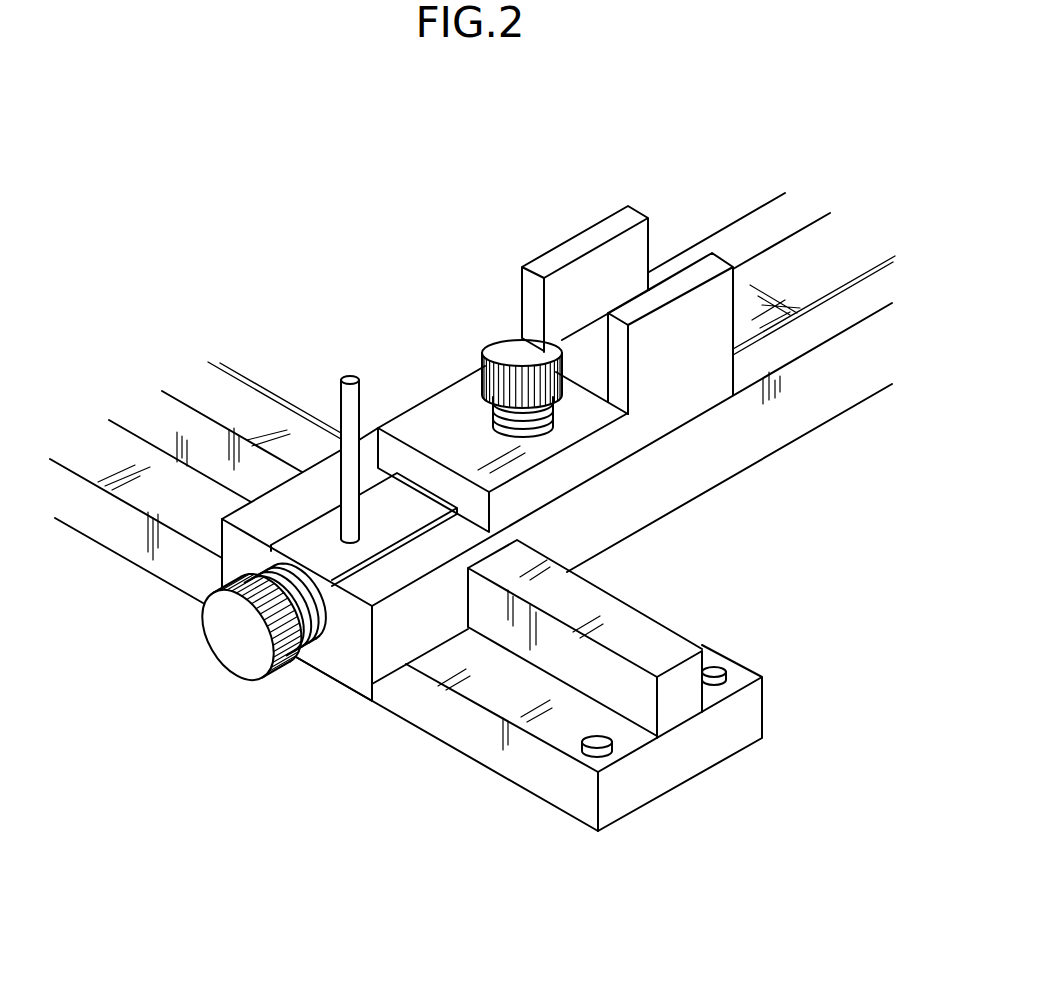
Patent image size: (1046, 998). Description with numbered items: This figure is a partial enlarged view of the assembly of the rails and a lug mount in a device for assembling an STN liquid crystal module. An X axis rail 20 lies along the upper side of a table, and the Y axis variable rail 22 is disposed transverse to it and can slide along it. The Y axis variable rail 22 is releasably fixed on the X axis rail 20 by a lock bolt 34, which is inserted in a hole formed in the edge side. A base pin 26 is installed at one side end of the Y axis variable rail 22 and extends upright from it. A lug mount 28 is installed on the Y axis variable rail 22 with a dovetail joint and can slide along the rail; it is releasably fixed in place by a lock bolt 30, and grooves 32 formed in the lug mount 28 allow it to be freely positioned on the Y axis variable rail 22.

The X axis rail 20 is at (494, 757).
The Y axis variable rail 22 is at (704, 476).
The base pin 26 is at (352, 384).
The lug mount 28 is at (574, 244).
The lock bolt 30 is at (516, 352).
The groove 32 is at (655, 256).
The lock bolt 34 is at (231, 647).